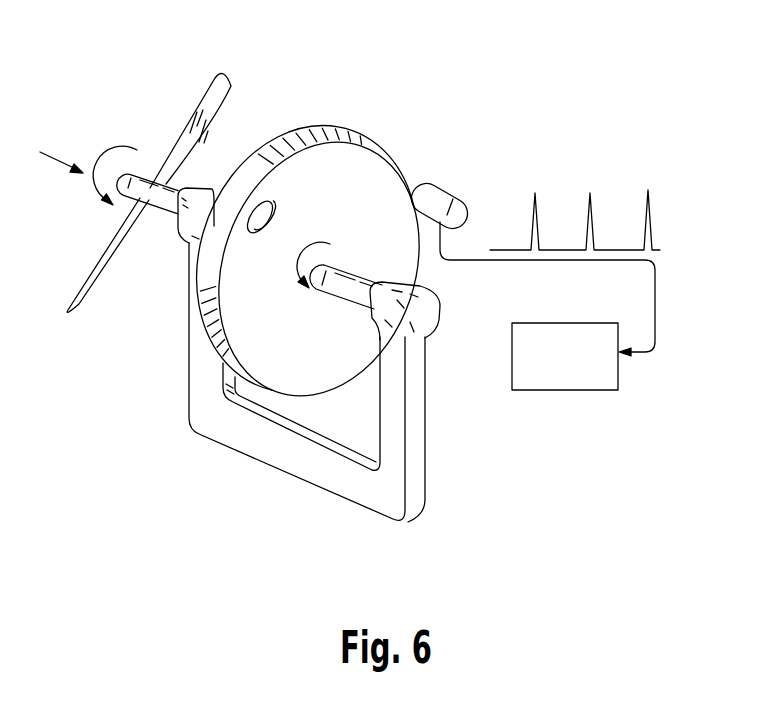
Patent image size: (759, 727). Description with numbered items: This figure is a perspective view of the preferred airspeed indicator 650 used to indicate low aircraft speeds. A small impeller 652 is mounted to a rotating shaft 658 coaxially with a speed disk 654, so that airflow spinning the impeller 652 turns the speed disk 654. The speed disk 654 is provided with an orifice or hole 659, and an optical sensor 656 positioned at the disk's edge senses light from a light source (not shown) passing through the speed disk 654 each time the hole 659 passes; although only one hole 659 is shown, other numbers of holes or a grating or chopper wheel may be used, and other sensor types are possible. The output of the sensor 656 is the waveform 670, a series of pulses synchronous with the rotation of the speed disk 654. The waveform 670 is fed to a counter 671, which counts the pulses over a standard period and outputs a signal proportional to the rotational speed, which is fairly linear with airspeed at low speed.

The airspeed indicator 650 is at (410, 581).
The impeller 652 is at (235, 68).
The speed disk 654 is at (367, 128).
The optical sensor 656 is at (460, 183).
The rotating shaft 658 is at (347, 297).
The hole 659 is at (250, 231).
The waveform 670 is at (658, 183).
The counter 671 is at (618, 380).